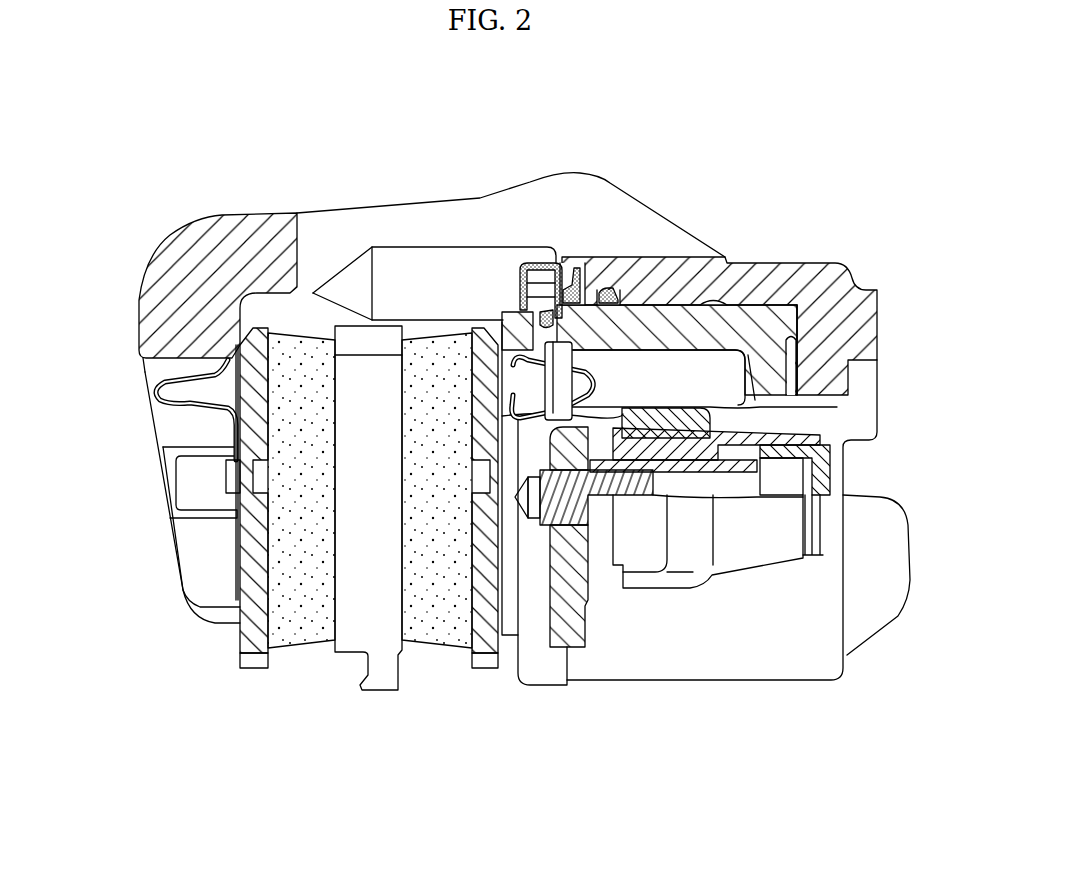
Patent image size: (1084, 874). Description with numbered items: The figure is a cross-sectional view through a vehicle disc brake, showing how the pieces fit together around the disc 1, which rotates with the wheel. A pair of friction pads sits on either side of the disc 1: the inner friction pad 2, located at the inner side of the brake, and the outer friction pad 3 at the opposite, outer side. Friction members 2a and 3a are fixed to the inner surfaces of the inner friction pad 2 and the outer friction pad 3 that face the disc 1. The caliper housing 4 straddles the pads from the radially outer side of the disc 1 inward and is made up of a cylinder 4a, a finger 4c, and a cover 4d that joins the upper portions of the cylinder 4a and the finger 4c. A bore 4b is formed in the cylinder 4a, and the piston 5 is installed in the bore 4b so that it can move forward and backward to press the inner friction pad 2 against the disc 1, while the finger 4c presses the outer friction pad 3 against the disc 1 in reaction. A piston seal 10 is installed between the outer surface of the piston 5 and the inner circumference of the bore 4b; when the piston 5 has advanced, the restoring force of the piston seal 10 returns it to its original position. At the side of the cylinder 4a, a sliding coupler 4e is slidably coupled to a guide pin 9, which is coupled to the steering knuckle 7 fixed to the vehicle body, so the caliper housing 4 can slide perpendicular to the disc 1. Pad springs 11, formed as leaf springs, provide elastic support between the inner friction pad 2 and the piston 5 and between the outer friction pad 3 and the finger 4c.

The disc 1 is at (375, 680).
The inner friction pad 2 is at (483, 650).
The friction member 2a is at (423, 632).
The outer friction pad 3 is at (250, 667).
The friction member 3a is at (313, 632).
The caliper housing 4 is at (503, 409).
The cylinder 4a is at (793, 268).
The bore 4b is at (735, 320).
The finger 4c is at (152, 420).
The cover 4d is at (436, 197).
The sliding coupler 4e is at (757, 565).
The piston 5 is at (653, 320).
The steering knuckle 7 is at (572, 638).
The guide pin 9 is at (587, 580).
The piston seal 10 is at (607, 290).
The pad spring 11 is at (560, 257).